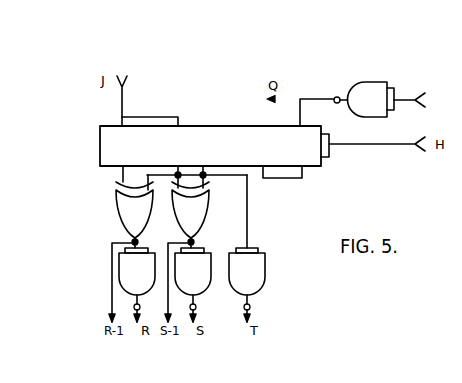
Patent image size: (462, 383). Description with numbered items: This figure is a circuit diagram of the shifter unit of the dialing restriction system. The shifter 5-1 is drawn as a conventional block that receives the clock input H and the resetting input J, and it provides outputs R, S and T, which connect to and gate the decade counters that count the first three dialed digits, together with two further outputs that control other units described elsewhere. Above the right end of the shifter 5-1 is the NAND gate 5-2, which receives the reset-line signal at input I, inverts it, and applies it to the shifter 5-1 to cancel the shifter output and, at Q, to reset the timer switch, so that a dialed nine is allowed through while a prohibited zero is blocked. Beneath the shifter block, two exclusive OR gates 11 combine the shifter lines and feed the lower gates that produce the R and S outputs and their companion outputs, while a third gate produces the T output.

The shifter 5-1 is at (105, 152).
The NAND gate 5-2 is at (372, 86).
The exclusive-OR gate 11 is at (138, 244).